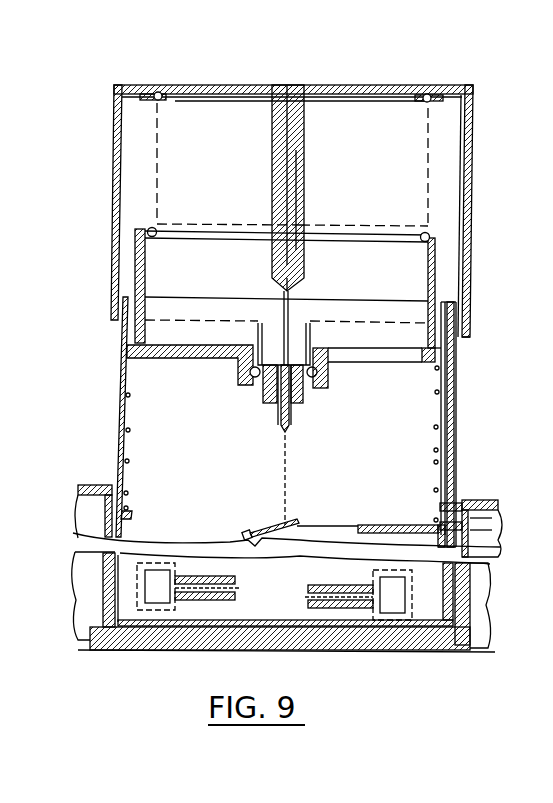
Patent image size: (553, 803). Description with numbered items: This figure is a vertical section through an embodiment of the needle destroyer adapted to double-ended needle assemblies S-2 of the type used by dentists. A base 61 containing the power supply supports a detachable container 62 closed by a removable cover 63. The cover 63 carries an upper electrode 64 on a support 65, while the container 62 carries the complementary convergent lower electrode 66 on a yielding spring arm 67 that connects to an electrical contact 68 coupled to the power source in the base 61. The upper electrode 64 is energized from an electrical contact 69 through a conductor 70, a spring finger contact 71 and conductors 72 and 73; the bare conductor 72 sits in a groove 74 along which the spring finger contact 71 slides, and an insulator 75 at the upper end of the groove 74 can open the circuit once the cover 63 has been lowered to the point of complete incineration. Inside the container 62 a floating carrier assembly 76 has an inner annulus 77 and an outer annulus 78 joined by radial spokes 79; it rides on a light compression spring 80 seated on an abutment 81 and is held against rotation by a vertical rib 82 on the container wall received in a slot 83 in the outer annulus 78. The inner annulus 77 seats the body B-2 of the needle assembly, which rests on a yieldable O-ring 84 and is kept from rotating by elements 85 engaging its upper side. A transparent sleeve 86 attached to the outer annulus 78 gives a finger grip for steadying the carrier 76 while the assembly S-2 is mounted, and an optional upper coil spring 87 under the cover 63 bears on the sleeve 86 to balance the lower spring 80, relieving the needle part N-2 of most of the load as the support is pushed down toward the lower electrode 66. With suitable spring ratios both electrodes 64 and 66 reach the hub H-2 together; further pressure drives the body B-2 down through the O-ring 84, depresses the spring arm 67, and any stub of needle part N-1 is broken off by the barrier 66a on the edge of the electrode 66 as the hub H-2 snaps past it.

The base 61 is at (486, 503).
The detachable container 62 is at (118, 428).
The removable cover 63 is at (236, 94).
The upper electrode 64 is at (283, 292).
The support 65 is at (304, 203).
The lower electrode 66 is at (292, 518).
The barrier 66a is at (252, 529).
The yielding spring arm 67 is at (340, 527).
The electrical contact 68 is at (480, 538).
The electrical contact 69 is at (460, 502).
The conductor 70 is at (444, 405).
The spring finger contact 71 is at (474, 315).
The conductor 72 is at (466, 192).
The conductor 73 is at (290, 168).
The groove 74 is at (461, 166).
The insulator 75 is at (469, 124).
The floating carrier assembly 76 is at (230, 364).
The inner annulus 77 is at (316, 349).
The outer annulus 78 is at (423, 365).
The radial spokes 79 is at (178, 360).
The light compression spring 80 is at (129, 462).
The abutment 81 is at (131, 514).
The vertical rib 82 is at (446, 451).
The slot 83 is at (450, 365).
The yieldable O-ring 84 is at (307, 378).
The elements 85 is at (315, 332).
The transparent sleeve 86 is at (146, 279).
The upper coil spring 87 is at (157, 178).
The base of the needle assembly B-2 is at (258, 341).
The hub H-2 is at (287, 428).
The needle part N-1 is at (288, 470).
The needle part N-2 is at (292, 311).
The double-ended needle assembly S-2 is at (255, 398).